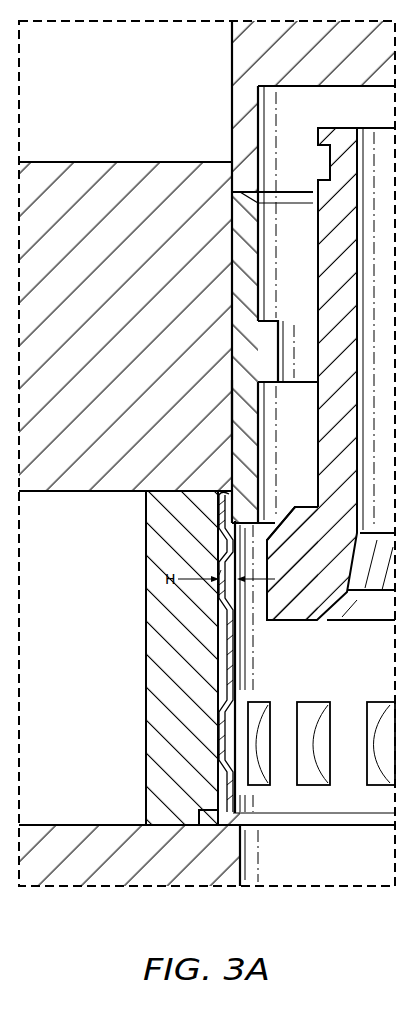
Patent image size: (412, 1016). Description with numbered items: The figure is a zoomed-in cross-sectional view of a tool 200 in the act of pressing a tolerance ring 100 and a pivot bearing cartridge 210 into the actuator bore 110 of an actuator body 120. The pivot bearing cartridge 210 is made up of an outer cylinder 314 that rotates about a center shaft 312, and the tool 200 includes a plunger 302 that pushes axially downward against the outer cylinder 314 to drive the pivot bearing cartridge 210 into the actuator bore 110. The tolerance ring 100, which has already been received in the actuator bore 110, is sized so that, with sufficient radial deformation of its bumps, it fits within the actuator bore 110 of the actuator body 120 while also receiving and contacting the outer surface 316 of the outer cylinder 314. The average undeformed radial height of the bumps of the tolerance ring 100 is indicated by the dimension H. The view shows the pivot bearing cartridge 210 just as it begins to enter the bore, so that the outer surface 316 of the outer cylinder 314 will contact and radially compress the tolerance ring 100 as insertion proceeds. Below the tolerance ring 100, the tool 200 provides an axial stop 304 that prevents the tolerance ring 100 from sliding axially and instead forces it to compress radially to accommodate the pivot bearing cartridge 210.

The tolerance ring 100 is at (317, 798).
The actuator bore 110 is at (235, 633).
The actuator body 120 is at (146, 690).
The tool 200 is at (136, 162).
The pivot bearing cartridge 210 is at (247, 234).
The plunger 302 is at (231, 96).
The axial stop 304 is at (223, 863).
The center shaft 312 is at (338, 620).
The outer cylinder 314 is at (260, 340).
The outer surface 316 is at (232, 408).